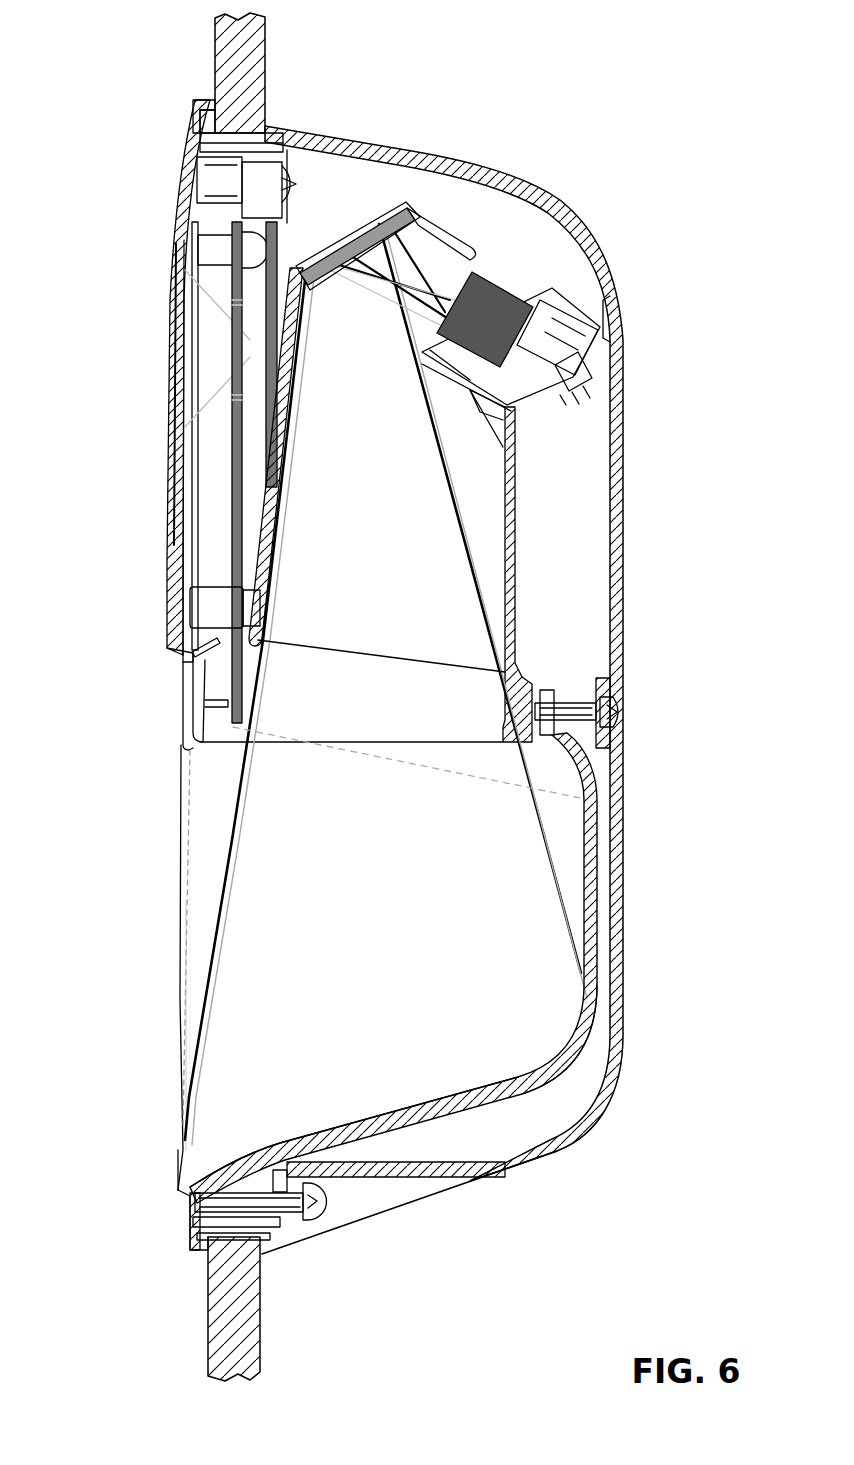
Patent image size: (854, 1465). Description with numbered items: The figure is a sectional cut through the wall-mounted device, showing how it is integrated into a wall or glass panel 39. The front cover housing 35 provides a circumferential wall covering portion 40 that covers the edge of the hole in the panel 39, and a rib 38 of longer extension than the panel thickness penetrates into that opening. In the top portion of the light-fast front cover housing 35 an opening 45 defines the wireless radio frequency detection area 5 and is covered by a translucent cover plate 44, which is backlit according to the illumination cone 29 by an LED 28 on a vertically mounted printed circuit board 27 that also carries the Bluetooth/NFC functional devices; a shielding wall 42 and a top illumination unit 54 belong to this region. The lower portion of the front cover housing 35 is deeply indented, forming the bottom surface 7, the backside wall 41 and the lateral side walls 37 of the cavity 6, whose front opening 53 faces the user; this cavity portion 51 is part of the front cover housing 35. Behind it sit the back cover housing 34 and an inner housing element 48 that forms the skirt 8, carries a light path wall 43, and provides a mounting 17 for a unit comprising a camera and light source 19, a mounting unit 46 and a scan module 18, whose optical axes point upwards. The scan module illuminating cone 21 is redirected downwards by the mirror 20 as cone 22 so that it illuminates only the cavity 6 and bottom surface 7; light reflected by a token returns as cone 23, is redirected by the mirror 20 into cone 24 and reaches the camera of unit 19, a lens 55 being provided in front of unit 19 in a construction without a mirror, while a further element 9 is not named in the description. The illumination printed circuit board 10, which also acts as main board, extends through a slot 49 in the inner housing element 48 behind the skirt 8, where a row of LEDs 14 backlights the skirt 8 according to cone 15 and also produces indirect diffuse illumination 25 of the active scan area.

The wireless radio frequency detection area 5 is at (150, 388).
The cavity 6 is at (404, 1080).
The bottom surface 7 is at (368, 1124).
The skirt 8 is at (197, 745).
The lens 9 is at (410, 725).
The illumination printed circuit board 10 is at (237, 516).
The row of LEDs 14 is at (220, 697).
The backlighting cone 15 is at (207, 710).
The mounting 17 is at (495, 408).
The scan module 18 is at (570, 312).
The camera and light source unit 19 is at (555, 290).
The mirror 20 is at (355, 245).
The scan module illuminating cone 21 is at (440, 253).
The scan module illuminating cone behind mirror 22 is at (185, 1075).
The camera detection cone before mirror 23 is at (198, 1107).
The camera detection cone behind mirror 24 is at (493, 315).
The indirect illumination of active scan area 25 is at (205, 812).
The printed circuit board for Bluetooth/NFC communication 27 is at (188, 212).
The LED for backside illumination of top cover plate 28 is at (262, 325).
The illumination cone 29 is at (213, 290).
The back cover housing 34 is at (555, 193).
The front cover housing 35 is at (198, 160).
The lateral side walls 37 is at (247, 948).
The rib 38 is at (245, 147).
The wall or glass panel 39 is at (258, 55).
The circumferential wall covering portion 40 is at (200, 108).
The backside wall 41 is at (592, 848).
The shielding wall 42 is at (433, 232).
The light path wall 43 is at (262, 556).
The cover plate 44 is at (170, 480).
The opening 45 is at (176, 440).
The mounting unit 46 is at (563, 373).
The inner housing element 48 is at (515, 620).
The insertion slot 49 is at (168, 622).
The cavity portion 51 is at (568, 1054).
The front opening of cavity 53 is at (237, 882).
The top illumination unit 54 is at (330, 765).
The lens 55 is at (200, 747).